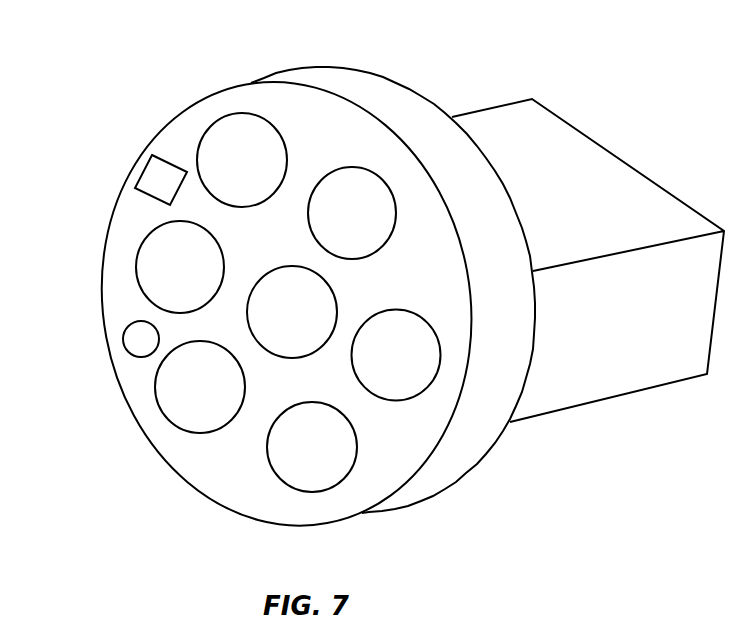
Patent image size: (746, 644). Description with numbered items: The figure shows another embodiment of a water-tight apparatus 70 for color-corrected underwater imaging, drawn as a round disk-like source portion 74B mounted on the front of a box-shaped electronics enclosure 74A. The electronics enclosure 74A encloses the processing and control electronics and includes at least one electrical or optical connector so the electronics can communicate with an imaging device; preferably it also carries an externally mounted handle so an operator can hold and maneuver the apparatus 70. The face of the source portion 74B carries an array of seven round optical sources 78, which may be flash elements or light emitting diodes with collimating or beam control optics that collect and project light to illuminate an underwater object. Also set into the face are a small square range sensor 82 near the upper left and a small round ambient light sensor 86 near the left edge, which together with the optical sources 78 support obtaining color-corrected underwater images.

The apparatus 70 is at (94, 85).
The electronics enclosure 74A is at (582, 390).
The source portion 74B is at (467, 453).
The optical sources 78 is at (382, 211).
The range sensor 82 is at (150, 175).
The ambient light sensor 86 is at (132, 339).